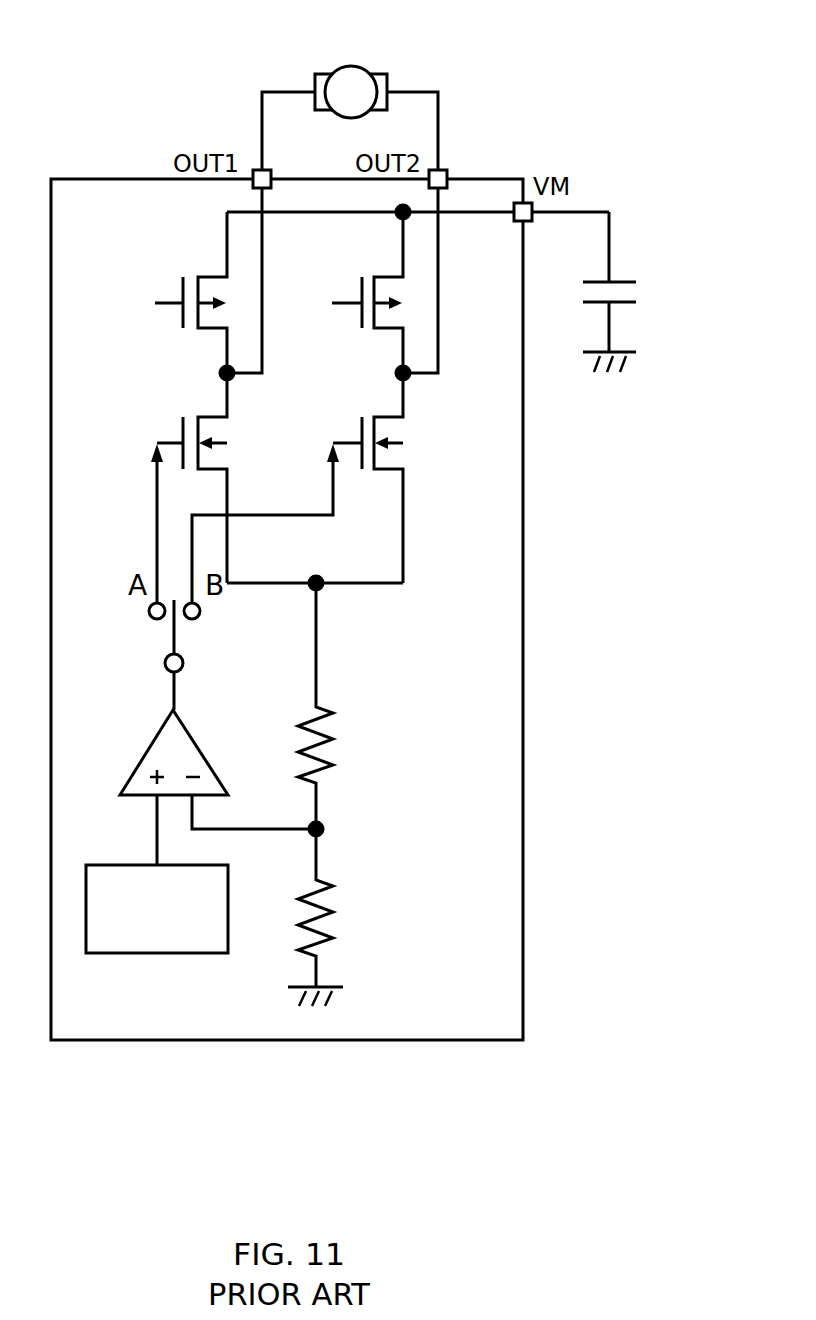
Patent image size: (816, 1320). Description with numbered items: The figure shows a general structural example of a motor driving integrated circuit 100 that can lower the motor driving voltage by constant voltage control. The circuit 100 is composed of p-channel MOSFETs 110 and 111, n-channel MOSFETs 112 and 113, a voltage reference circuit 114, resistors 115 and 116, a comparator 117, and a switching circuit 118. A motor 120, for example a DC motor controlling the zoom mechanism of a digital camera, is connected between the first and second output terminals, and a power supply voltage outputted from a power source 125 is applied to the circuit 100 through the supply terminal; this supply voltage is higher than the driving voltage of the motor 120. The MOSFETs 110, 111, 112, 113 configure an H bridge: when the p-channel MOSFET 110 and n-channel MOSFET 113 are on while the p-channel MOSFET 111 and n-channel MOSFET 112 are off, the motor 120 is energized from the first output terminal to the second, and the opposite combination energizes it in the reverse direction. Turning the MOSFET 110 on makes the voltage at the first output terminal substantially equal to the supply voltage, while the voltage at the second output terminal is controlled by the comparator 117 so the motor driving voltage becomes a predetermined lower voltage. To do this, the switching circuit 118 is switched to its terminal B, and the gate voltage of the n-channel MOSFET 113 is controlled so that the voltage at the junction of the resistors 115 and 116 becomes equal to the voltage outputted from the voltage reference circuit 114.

The motor driving integrated circuit 100 is at (104, 178).
The p-channel MOSFET 110 is at (208, 330).
The p-channel MOSFET 111 is at (385, 330).
The n-channel MOSFET 112 is at (227, 452).
The n-channel MOSFET 113 is at (403, 452).
The voltage reference circuit 114 is at (165, 953).
The resistor 115 is at (338, 733).
The resistor 116 is at (338, 905).
The comparator 117 is at (148, 742).
The switching circuit 118 is at (187, 640).
The motor 120 is at (352, 66).
The power source 125 is at (625, 293).